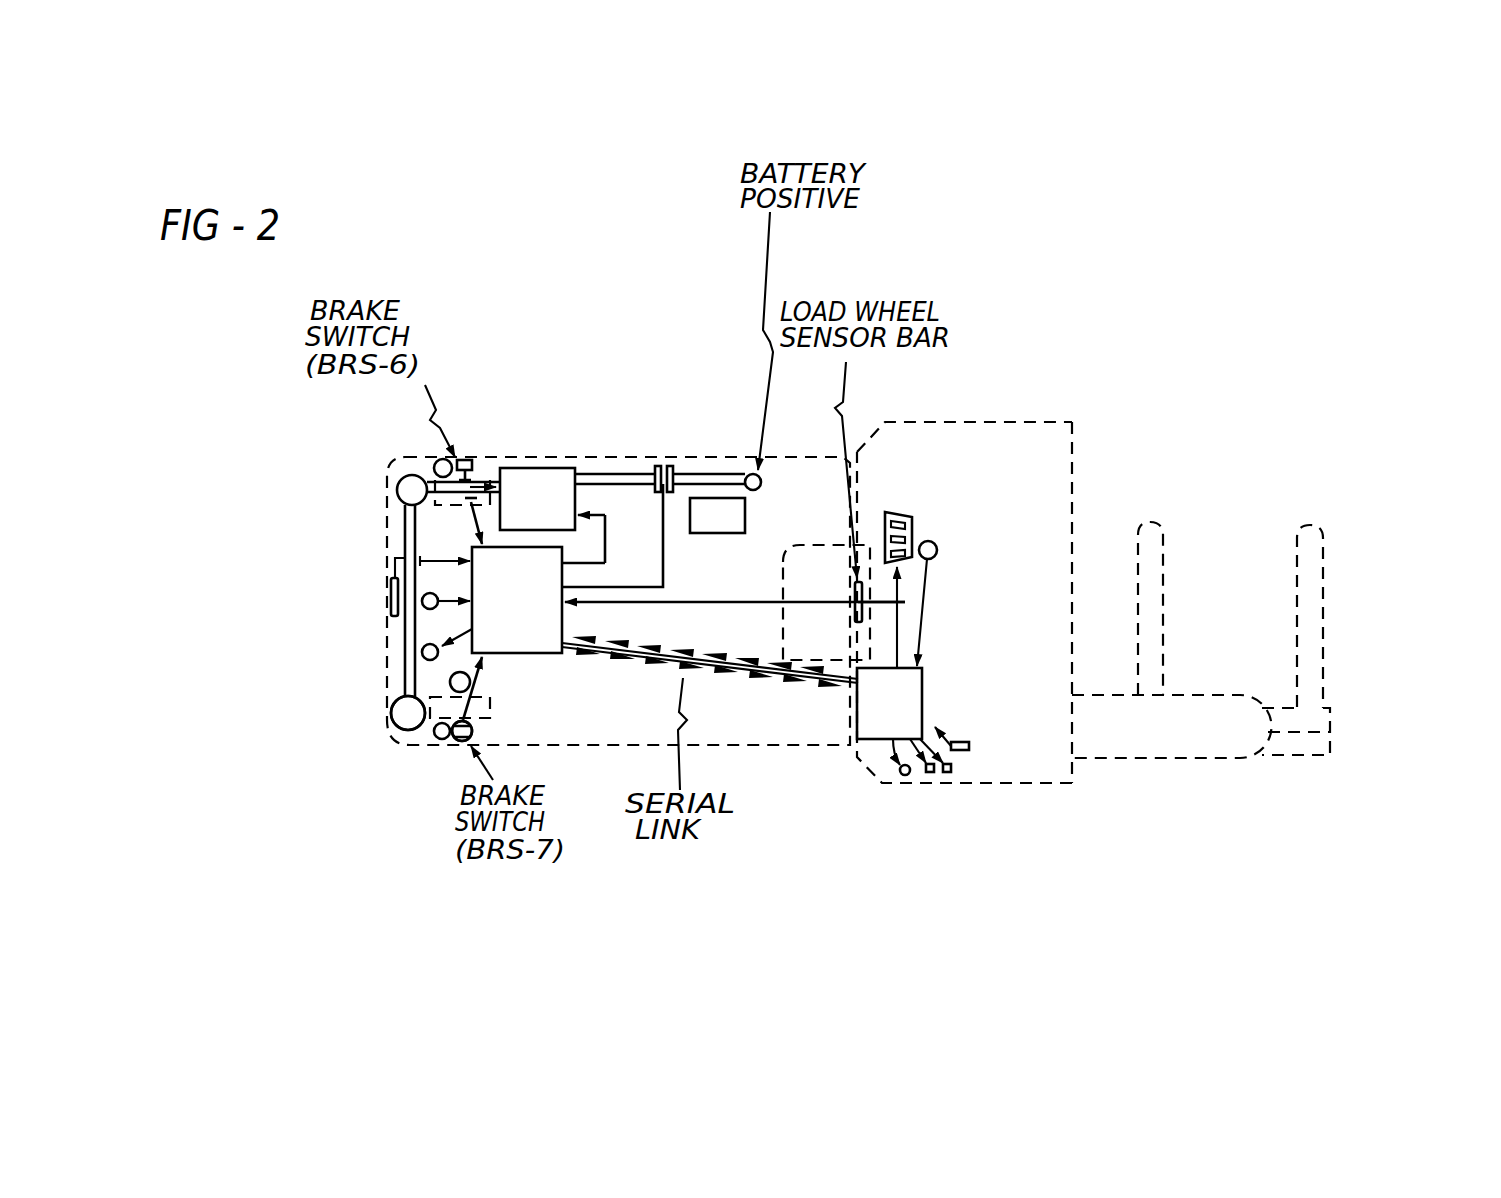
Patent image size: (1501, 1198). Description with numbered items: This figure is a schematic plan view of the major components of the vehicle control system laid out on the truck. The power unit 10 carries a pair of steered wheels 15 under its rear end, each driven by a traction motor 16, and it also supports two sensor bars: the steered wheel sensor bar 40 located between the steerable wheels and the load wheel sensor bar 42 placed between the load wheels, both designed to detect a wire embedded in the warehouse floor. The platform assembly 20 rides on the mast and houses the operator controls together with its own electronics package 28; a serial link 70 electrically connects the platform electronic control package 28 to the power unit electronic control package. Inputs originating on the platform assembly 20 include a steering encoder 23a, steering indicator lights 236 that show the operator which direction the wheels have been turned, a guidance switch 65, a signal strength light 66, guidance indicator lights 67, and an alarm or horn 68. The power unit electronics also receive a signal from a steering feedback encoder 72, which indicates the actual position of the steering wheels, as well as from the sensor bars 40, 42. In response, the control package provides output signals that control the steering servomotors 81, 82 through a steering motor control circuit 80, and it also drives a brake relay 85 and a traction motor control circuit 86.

The power unit 10 is at (798, 452).
The steered wheels 15 is at (428, 745).
The traction motor 16 is at (473, 722).
The platform assembly 20 is at (1040, 502).
The steering encoder 23a is at (936, 540).
The electronics package 28 is at (933, 785).
The sensor bar 40 is at (385, 588).
The sensor bar 42 is at (905, 604).
The guidance switch 65 is at (965, 740).
The signal strength light (LGT-9) 66 is at (924, 780).
The guidance indicator lights 67 is at (951, 776).
The alarm or horn 68 is at (897, 771).
The serial link 70 is at (735, 619).
The steering feedback encoder 72 is at (420, 608).
The steering motor control circuit 80 is at (530, 465).
The steering servomotor 81 is at (391, 477).
The steering servomotor 82 is at (398, 742).
The brake relay 85 is at (416, 665).
The traction motor control circuit 86 is at (975, 252).
The steering indicator lights 236 is at (904, 510).